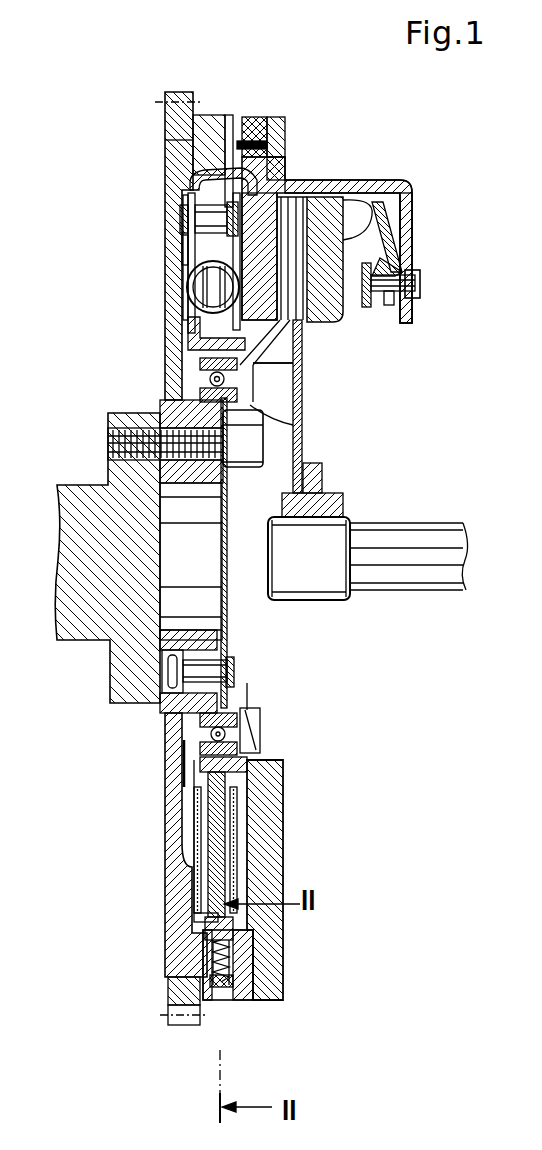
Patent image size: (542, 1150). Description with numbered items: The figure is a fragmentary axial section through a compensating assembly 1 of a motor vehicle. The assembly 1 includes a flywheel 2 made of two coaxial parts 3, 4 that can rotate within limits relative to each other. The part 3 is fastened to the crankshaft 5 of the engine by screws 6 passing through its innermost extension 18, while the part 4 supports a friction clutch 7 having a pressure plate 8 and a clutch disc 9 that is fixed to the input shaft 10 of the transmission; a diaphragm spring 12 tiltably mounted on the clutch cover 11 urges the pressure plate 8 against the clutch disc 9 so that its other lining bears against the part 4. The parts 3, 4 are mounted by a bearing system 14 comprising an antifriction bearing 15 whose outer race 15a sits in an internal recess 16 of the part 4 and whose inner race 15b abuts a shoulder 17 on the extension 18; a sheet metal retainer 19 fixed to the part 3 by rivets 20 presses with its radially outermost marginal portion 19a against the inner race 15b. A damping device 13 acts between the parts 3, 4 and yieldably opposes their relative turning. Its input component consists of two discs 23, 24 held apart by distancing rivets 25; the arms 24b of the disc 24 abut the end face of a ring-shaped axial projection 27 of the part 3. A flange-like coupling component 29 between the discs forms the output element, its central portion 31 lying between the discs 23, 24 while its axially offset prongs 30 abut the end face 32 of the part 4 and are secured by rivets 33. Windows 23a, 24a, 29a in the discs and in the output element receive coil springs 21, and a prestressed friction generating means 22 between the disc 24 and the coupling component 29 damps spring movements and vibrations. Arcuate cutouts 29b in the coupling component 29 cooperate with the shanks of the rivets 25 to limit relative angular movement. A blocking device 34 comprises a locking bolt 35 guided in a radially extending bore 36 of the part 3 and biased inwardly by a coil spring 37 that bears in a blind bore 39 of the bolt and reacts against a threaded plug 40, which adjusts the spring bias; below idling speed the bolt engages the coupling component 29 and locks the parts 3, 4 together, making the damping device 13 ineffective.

The compensating assembly 1 is at (306, 62).
The flywheel 2 is at (275, 46).
The part 3 is at (167, 138).
The part 4 is at (290, 200).
The crankshaft 5 is at (72, 500).
The screws 6 is at (330, 473).
The friction clutch 7 is at (407, 190).
The pressure plate 8 is at (325, 258).
The clutch disc 9 is at (325, 202).
The input shaft 10 is at (398, 585).
The clutch cover 11 is at (407, 217).
The diaphragm spring 12 is at (378, 237).
The damping device 13 is at (177, 298).
The bearing system 14 is at (290, 404).
The antifriction bearing 15 is at (240, 388).
The outer race 15a is at (293, 365).
The inner race 15b is at (293, 422).
The internal recess 16 is at (277, 348).
The shoulder 17 is at (200, 393).
The extension 18 is at (210, 478).
The sheet metal retainer 19 is at (220, 643).
The radially outermost marginal portion 19a is at (237, 720).
The rivets 20 is at (210, 672).
The coil springs 21 is at (180, 287).
The friction generating means 22 is at (183, 220).
The disc 23 is at (198, 820).
The windows 23a is at (188, 263).
The disc 24 is at (233, 817).
The windows 24a is at (188, 247).
The arms 24b is at (229, 114).
The rivets 25 is at (262, 206).
The axial projection 27 is at (203, 113).
The coupling component 29 is at (223, 845).
The windows 29a is at (190, 320).
The arcuate cutouts 29b is at (197, 185).
The prongs 30 is at (256, 112).
The central portion 31 is at (284, 844).
The end face 32 is at (270, 122).
The rivets 33 is at (283, 134).
The blocking device 34 is at (206, 1027).
The locking bolt 35 is at (197, 928).
The radially extending bore 36 is at (248, 1005).
The coil spring 37 is at (235, 950).
The blind bore 39 is at (235, 940).
The plug 40 is at (223, 1003).